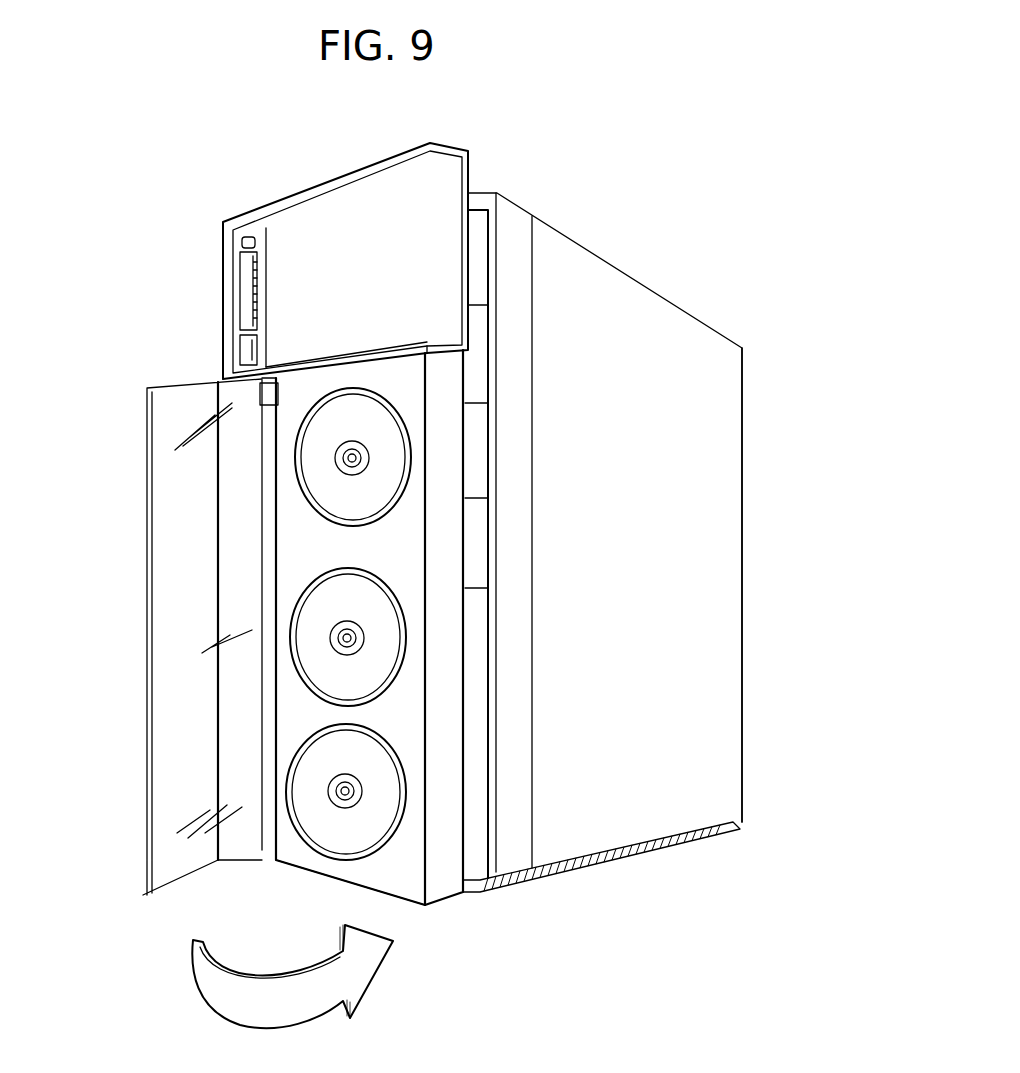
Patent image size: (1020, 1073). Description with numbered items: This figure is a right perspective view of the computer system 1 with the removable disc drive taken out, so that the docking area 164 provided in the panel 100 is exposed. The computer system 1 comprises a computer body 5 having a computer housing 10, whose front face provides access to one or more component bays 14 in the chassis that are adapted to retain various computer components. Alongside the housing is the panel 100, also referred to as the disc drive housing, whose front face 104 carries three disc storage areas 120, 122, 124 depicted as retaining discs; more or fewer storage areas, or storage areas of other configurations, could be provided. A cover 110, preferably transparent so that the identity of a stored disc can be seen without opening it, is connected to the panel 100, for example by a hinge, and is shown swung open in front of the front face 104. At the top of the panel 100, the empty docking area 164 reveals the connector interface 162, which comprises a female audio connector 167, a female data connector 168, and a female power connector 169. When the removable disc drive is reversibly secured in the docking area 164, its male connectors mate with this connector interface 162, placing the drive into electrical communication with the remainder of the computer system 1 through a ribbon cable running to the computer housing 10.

The computer system 1 is at (776, 301).
The computer body 5 is at (746, 377).
The computer housing 10 is at (644, 542).
The component bays 14 is at (475, 233).
The panel 100 is at (541, 684).
The front face of the panel 104 is at (302, 852).
The cover 110 is at (142, 637).
The disc storage area 120 is at (437, 640).
The disc storage area 122 is at (437, 453).
The disc storage area 124 is at (437, 798).
The connector interface 162 is at (249, 297).
The docking area 164 is at (382, 213).
The female audio connector 167 is at (255, 238).
The female data connector 168 is at (257, 293).
The female power connector 169 is at (257, 352).